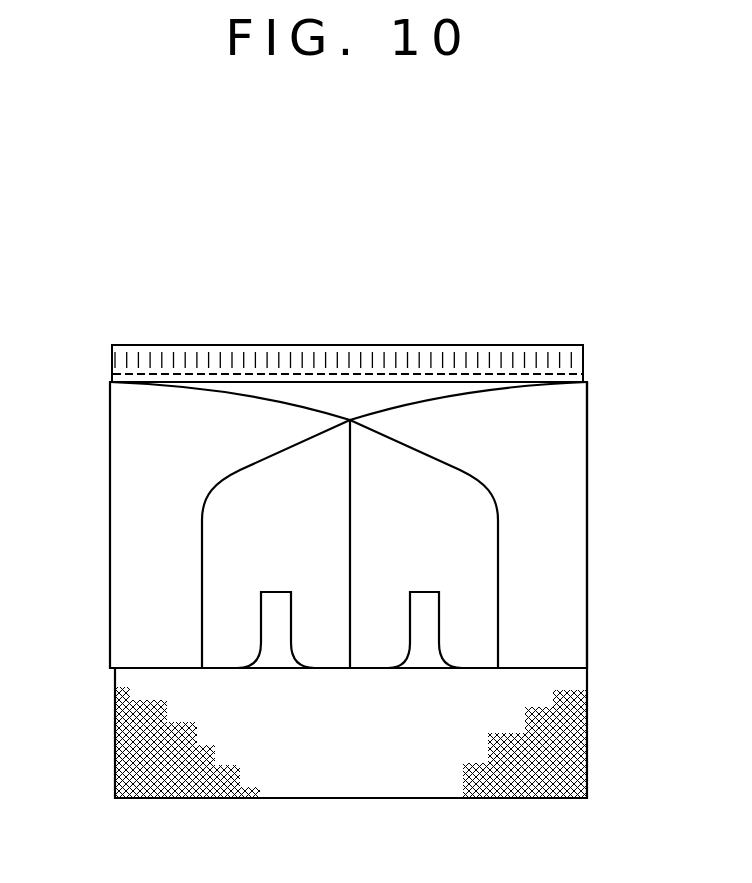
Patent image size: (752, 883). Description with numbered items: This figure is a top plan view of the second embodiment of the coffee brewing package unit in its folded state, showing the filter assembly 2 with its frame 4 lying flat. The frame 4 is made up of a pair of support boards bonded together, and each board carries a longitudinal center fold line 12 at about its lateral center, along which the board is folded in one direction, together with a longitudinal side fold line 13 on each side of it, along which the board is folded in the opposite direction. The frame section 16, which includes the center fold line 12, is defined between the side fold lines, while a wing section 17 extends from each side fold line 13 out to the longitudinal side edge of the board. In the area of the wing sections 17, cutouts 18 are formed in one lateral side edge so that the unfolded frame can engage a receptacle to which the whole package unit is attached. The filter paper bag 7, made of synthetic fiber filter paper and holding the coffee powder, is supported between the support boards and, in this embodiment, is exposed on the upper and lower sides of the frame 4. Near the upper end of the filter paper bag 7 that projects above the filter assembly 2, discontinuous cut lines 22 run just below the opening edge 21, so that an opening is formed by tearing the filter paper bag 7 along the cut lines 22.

The filter assembly 2 is at (87, 375).
The frame 4 is at (590, 427).
The filter paper bag 7 is at (312, 390).
The longitudinal center fold line 12 is at (110, 460).
The longitudinal side fold line 13 is at (352, 460).
The frame section 16 is at (155, 595).
The wing section 17 is at (230, 517).
The cutout 18 is at (278, 628).
The opening edge 21 is at (228, 360).
The discontinuous cut line 22 is at (467, 372).